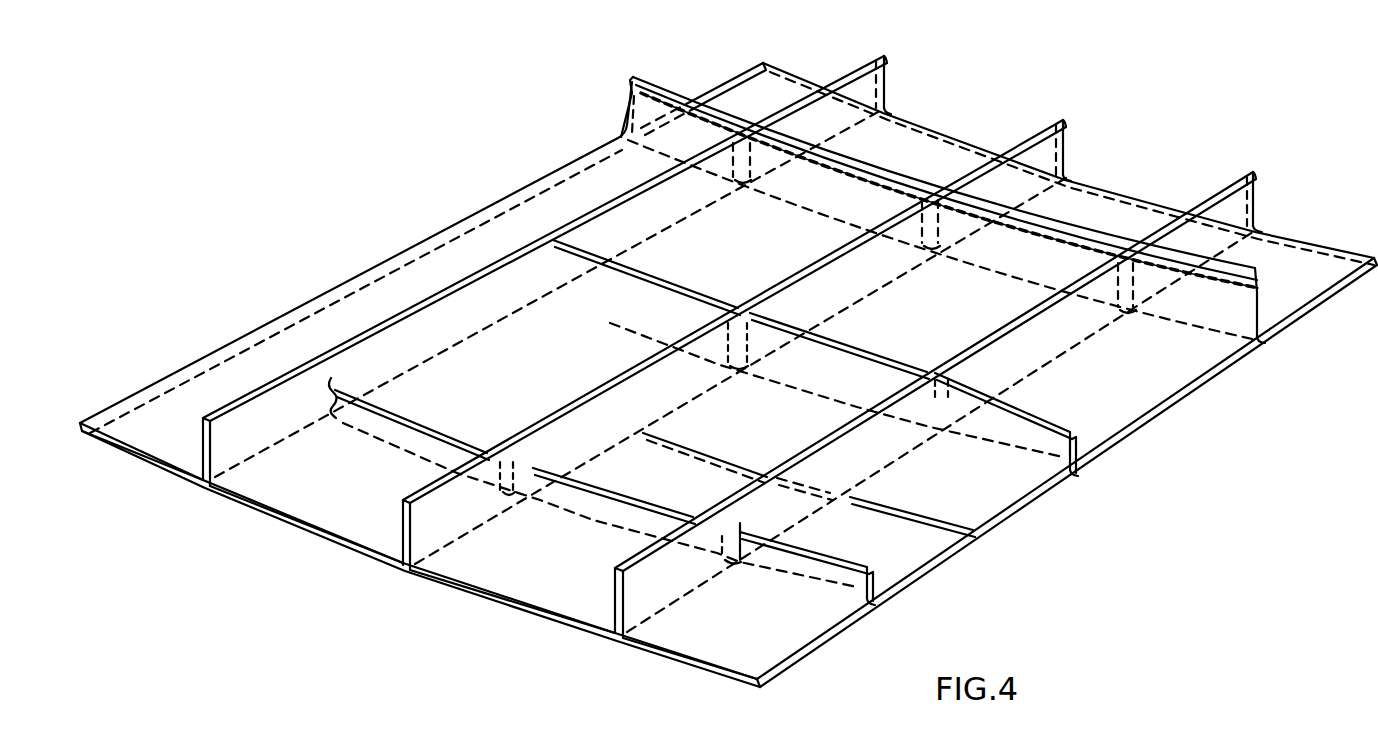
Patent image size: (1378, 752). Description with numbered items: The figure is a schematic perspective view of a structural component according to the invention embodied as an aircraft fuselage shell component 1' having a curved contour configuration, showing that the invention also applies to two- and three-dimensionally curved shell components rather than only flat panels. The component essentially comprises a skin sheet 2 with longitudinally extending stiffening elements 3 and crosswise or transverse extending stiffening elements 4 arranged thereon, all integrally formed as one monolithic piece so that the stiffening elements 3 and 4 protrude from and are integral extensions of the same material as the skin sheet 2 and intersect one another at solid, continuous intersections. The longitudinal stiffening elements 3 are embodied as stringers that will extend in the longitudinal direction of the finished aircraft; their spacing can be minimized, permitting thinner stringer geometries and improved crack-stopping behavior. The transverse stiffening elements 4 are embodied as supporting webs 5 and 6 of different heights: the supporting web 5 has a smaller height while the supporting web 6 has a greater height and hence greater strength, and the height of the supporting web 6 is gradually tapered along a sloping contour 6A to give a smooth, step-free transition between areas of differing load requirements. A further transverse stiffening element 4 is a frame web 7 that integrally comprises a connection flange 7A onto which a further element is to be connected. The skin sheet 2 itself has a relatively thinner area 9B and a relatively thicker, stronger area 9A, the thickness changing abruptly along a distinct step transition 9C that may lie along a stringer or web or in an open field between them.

The aircraft fuselage shell component 1' is at (328, 144).
The skin sheet 2 is at (258, 350).
The longitudinally extending stiffening elements 3 is at (218, 490).
The transverse stiffening elements 4 is at (769, 441).
The supporting web 5 is at (812, 573).
The supporting web 6 is at (1040, 430).
The sloping contour 6A is at (1028, 412).
The frame web 7 is at (925, 186).
The connection flange 7A is at (634, 75).
The thicker area 9A is at (494, 605).
The thinner area 9B is at (285, 525).
The step transition 9C is at (405, 576).